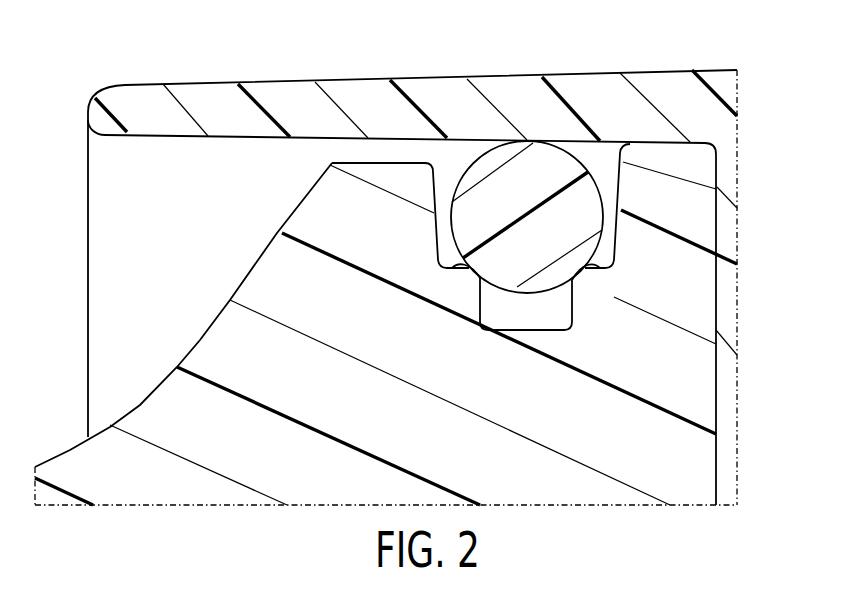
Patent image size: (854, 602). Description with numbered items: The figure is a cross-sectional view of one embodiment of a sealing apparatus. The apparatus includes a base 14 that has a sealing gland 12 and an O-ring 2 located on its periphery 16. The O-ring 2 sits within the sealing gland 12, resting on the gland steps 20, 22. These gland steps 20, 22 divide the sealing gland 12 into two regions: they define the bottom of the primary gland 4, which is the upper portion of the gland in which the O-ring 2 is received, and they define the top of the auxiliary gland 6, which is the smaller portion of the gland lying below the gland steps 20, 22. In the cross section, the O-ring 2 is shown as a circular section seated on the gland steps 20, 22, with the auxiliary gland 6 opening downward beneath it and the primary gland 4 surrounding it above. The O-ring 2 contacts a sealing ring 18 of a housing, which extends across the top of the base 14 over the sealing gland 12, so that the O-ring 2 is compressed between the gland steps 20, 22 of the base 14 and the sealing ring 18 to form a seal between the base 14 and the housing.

The O-ring 2 is at (583, 163).
The primary gland 4 is at (614, 253).
The auxiliary gland 6 is at (480, 332).
The sealing gland 12 is at (622, 193).
The base 14 is at (208, 492).
The periphery 16 is at (348, 158).
The sealing ring 18 is at (590, 92).
The gland step 20 is at (590, 283).
The gland step 22 is at (452, 270).